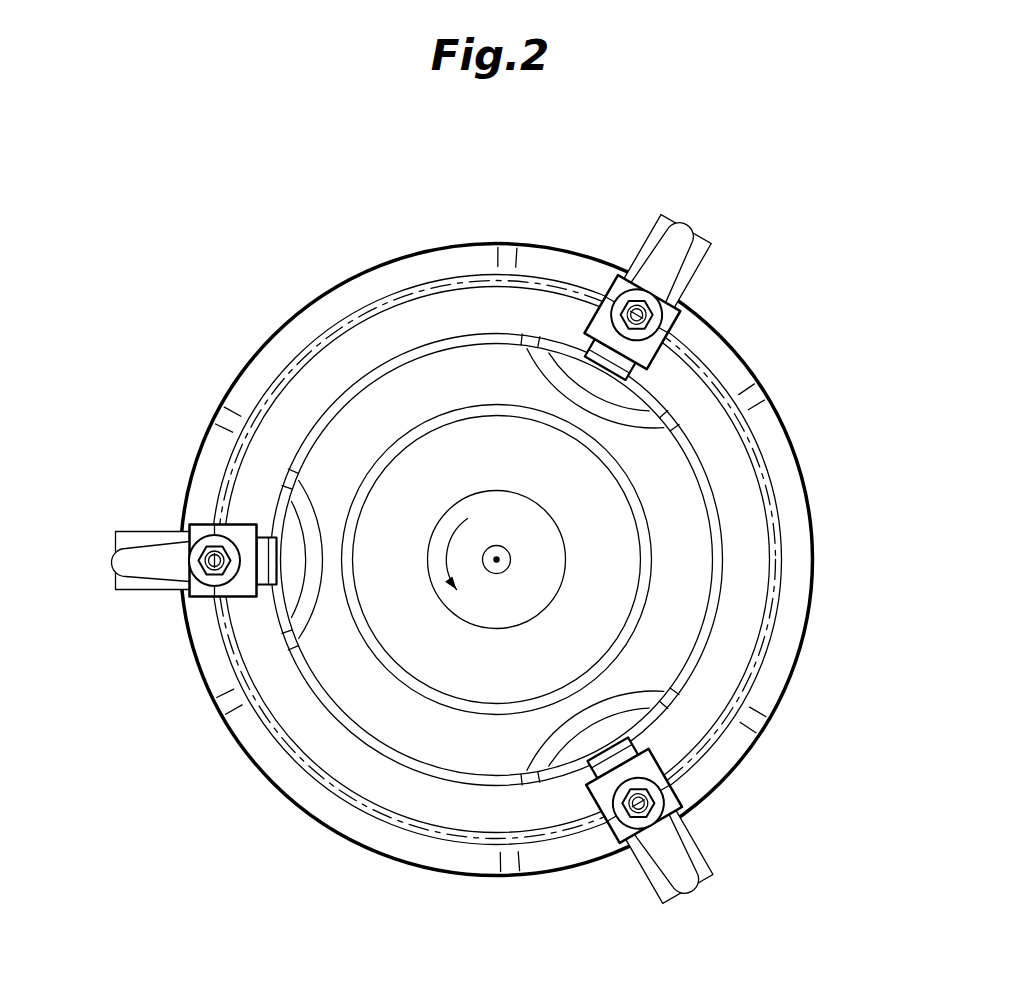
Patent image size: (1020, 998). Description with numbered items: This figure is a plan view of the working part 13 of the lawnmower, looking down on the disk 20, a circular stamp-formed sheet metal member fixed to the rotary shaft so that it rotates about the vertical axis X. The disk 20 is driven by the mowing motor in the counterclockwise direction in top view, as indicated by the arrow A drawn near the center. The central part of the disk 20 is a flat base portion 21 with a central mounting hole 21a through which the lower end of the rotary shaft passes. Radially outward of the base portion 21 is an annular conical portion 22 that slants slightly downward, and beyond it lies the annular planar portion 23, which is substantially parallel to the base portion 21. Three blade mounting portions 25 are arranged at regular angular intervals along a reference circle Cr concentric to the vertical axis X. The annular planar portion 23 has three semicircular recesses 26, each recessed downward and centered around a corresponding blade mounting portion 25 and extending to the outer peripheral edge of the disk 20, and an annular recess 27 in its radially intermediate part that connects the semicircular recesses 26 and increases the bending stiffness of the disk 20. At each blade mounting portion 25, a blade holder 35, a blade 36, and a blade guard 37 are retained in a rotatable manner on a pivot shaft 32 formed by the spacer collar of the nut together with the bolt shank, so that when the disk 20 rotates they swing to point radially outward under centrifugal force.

The working part 13 is at (458, 533).
The disk 20 is at (748, 350).
The base portion 21 is at (540, 535).
The central mounting hole 21a is at (499, 556).
The conical portion 22 is at (634, 498).
The annular planar portion 23 is at (792, 500).
The blade mounting portion 25 is at (410, 560).
The semicircular recess 26 is at (549, 262).
The annular recess 27 is at (743, 592).
The pivot shaft 32 is at (659, 303).
The blade holder 35 is at (615, 282).
The blade 36 is at (713, 258).
The blade guard 37 is at (683, 228).
The reference circle Cr is at (413, 290).
The arrow indicating rotation direction A is at (456, 532).
The vertical axis X is at (499, 566).